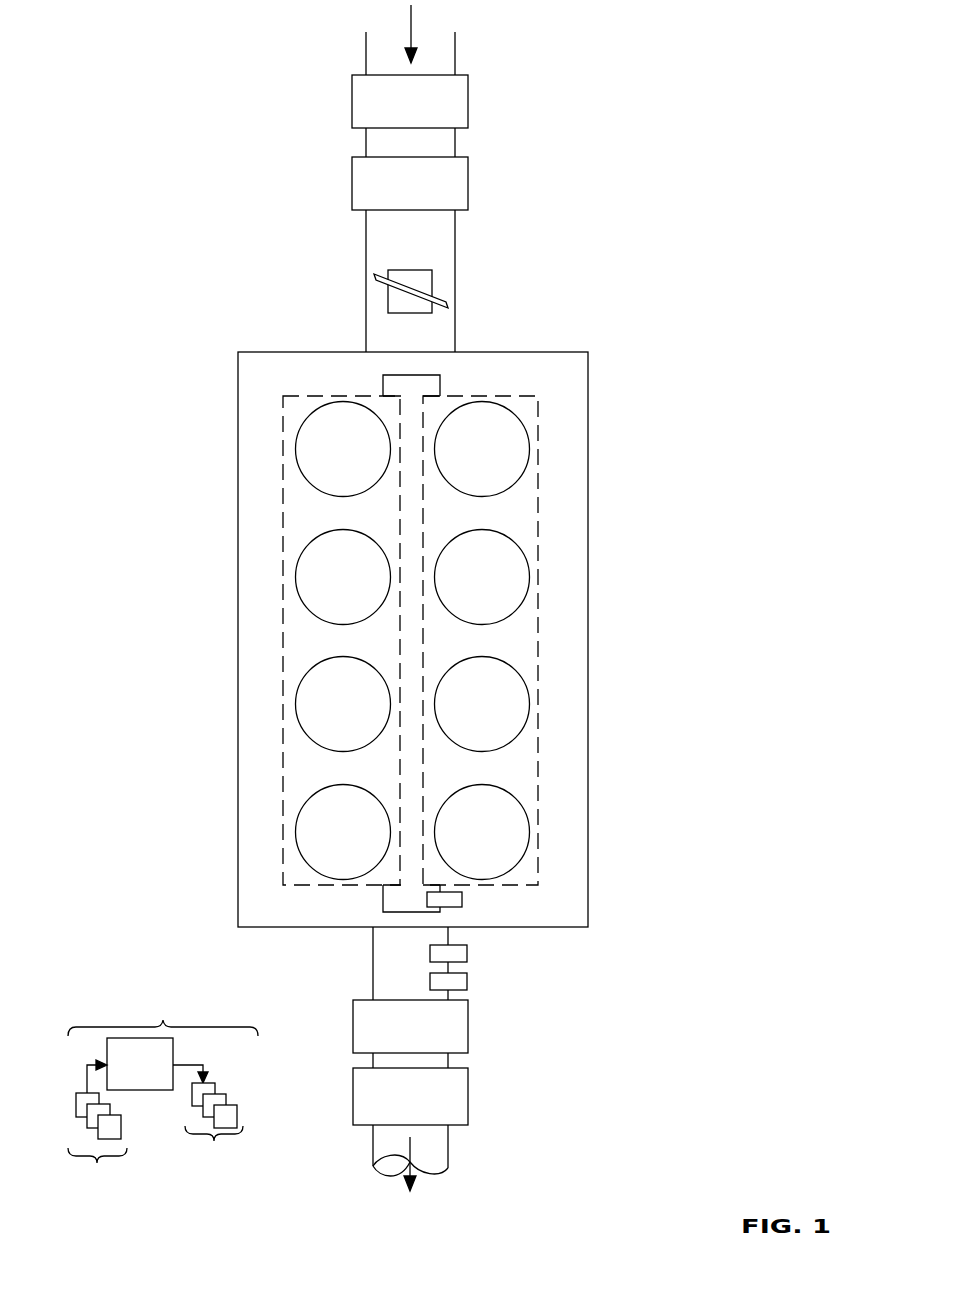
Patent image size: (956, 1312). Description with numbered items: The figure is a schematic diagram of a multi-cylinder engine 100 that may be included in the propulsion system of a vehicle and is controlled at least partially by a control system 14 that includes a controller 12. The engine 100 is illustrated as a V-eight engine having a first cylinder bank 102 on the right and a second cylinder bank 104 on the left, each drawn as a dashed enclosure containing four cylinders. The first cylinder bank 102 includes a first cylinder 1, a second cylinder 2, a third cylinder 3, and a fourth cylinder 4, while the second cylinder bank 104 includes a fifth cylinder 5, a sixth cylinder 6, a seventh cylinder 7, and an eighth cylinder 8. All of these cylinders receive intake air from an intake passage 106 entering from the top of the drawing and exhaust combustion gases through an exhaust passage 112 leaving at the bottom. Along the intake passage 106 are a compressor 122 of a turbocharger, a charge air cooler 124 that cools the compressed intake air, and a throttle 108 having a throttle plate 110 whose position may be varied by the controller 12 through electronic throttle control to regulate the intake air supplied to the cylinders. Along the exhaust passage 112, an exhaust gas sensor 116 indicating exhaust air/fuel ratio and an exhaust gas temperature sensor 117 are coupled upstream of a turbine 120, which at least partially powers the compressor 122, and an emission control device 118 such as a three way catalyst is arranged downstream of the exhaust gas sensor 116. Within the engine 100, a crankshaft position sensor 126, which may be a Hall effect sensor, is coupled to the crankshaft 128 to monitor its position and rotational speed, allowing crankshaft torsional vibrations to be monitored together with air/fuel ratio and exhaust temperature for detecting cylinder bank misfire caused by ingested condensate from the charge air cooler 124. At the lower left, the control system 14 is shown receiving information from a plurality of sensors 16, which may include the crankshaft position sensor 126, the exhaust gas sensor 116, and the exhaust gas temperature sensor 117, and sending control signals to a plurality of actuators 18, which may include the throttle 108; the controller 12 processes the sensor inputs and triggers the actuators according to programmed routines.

The multi-cylinder engine 100 is at (224, 328).
The first cylinder bank 102 is at (538, 437).
The second cylinder bank 104 is at (283, 437).
The intake passage 106 is at (395, 241).
The throttle 108 is at (398, 270).
The throttle plate 110 is at (444, 312).
The exhaust passage 112 is at (395, 981).
The exhaust gas sensor 116 is at (465, 961).
The exhaust gas temperature sensor 117 is at (465, 989).
The emission control device 118 is at (394, 1107).
The turbine 120 is at (394, 1037).
The compressor 122 is at (394, 111).
The charge air cooler 124 is at (394, 193).
The crankshaft position sensor 126 is at (462, 906).
The crankshaft 128 is at (440, 393).
The first cylinder 1 is at (476, 460).
The second cylinder 2 is at (476, 588).
The third cylinder 3 is at (476, 715).
The fourth cylinder 4 is at (476, 843).
The fifth cylinder 5 is at (337, 460).
The sixth cylinder 6 is at (337, 588).
The seventh cylinder 7 is at (337, 715).
The eighth cylinder 8 is at (337, 843).
The controller 12 is at (140, 1064).
The control system 14 is at (163, 990).
The sensors 16 is at (102, 1128).
The actuators 18 is at (217, 1128).